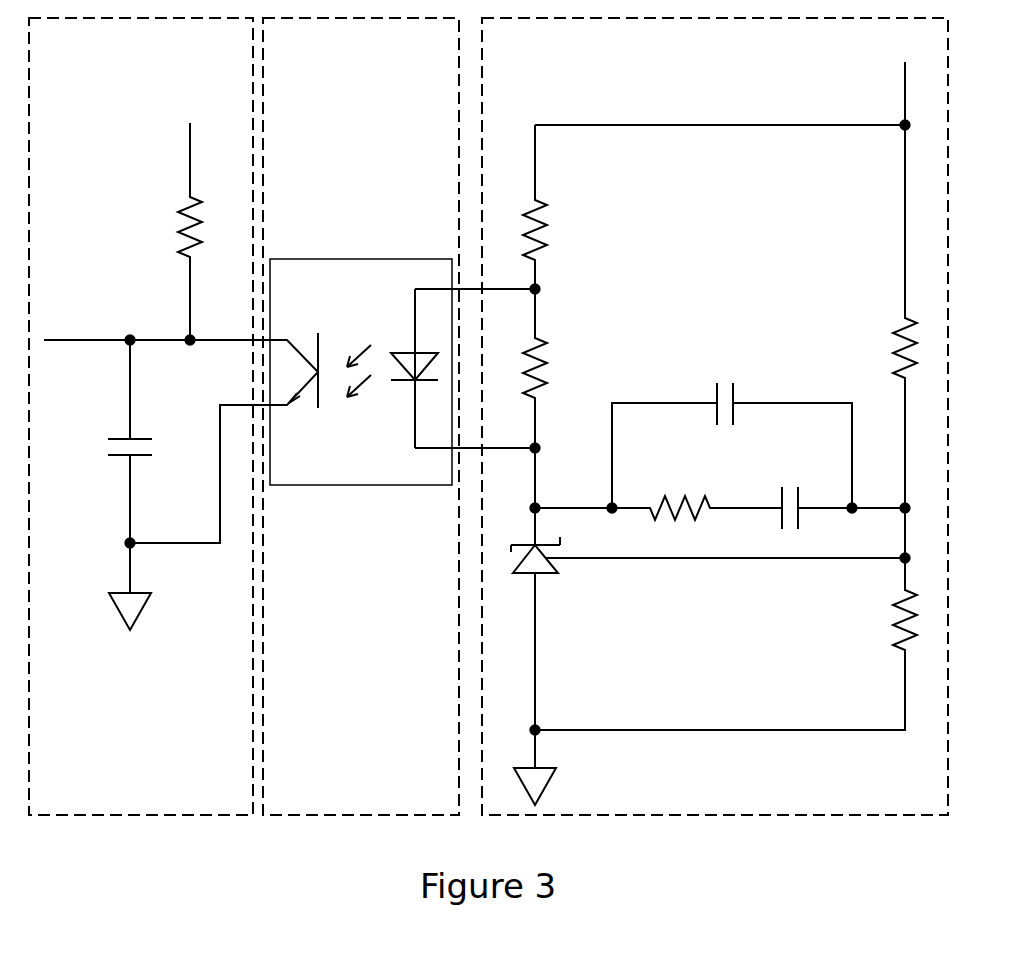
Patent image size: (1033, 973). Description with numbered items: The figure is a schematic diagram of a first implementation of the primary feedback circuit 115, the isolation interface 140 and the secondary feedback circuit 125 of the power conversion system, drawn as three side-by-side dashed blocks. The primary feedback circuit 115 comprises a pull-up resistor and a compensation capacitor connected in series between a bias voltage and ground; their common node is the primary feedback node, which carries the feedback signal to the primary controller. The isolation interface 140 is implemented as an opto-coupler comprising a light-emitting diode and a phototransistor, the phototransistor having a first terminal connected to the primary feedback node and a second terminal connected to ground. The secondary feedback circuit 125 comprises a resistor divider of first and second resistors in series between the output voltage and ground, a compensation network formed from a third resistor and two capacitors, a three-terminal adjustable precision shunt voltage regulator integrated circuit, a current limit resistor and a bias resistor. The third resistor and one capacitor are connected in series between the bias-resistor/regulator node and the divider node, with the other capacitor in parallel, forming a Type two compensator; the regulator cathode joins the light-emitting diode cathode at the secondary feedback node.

The primary feedback circuit 115 is at (173, 416).
The isolation interface 140 is at (399, 416).
The secondary feedback circuit 125 is at (715, 416).